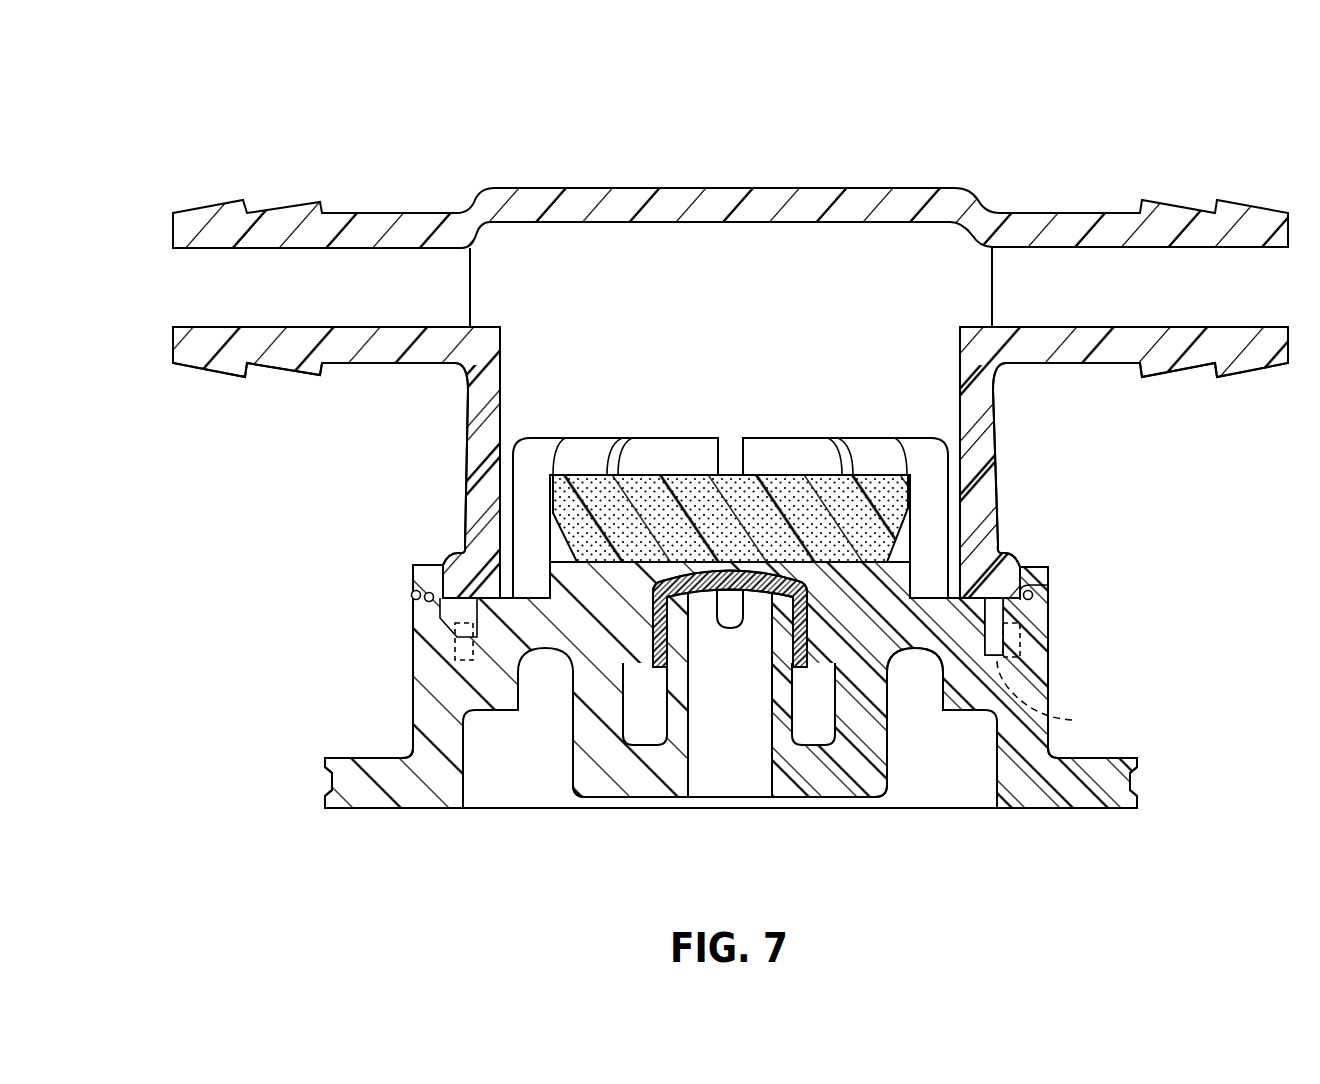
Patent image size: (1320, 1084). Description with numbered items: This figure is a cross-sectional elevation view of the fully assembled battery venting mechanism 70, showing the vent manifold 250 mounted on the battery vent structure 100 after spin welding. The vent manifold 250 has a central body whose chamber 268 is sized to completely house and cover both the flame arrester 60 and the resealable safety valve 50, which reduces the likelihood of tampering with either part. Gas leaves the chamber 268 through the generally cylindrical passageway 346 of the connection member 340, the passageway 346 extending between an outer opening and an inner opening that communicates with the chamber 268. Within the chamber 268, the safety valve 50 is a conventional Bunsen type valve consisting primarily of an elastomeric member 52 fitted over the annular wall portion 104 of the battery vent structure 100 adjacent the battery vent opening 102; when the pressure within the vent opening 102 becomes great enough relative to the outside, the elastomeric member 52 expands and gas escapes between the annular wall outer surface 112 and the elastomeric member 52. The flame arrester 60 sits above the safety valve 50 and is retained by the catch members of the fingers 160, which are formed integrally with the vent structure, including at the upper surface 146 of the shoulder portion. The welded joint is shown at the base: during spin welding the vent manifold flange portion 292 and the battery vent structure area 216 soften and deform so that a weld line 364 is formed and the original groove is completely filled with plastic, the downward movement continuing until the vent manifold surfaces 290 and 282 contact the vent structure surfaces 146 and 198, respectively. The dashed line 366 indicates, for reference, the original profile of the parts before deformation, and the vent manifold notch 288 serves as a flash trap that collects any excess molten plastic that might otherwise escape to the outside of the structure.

The venting mechanism 70 is at (730, 453).
The vent manifold 250 is at (793, 168).
The passageway 346 is at (1035, 268).
The connection member 340 is at (1078, 212).
The chamber 268 is at (668, 325).
The flame arrester 60 is at (708, 490).
The fingers 160 is at (791, 423).
The upper surface of the shoulder portion 146 is at (480, 560).
The weld line 364 is at (1010, 627).
The battery vent structure surface 198 is at (413, 592).
The vent manifold surface 282 is at (415, 610).
The notch 288 is at (1025, 597).
The flange portion 292 is at (467, 637).
The annular wall portion 104 is at (780, 642).
The battery vent opening 102 is at (757, 715).
The annular wall outer surface 112 is at (665, 680).
The elastomeric member 52 is at (798, 660).
The battery vent structure 100 is at (394, 704).
The battery vent structure area 216 is at (1047, 668).
The dashed line 366 is at (1020, 647).
The vent manifold surface 290 is at (985, 615).
The resealable safety valve 50 is at (880, 752).